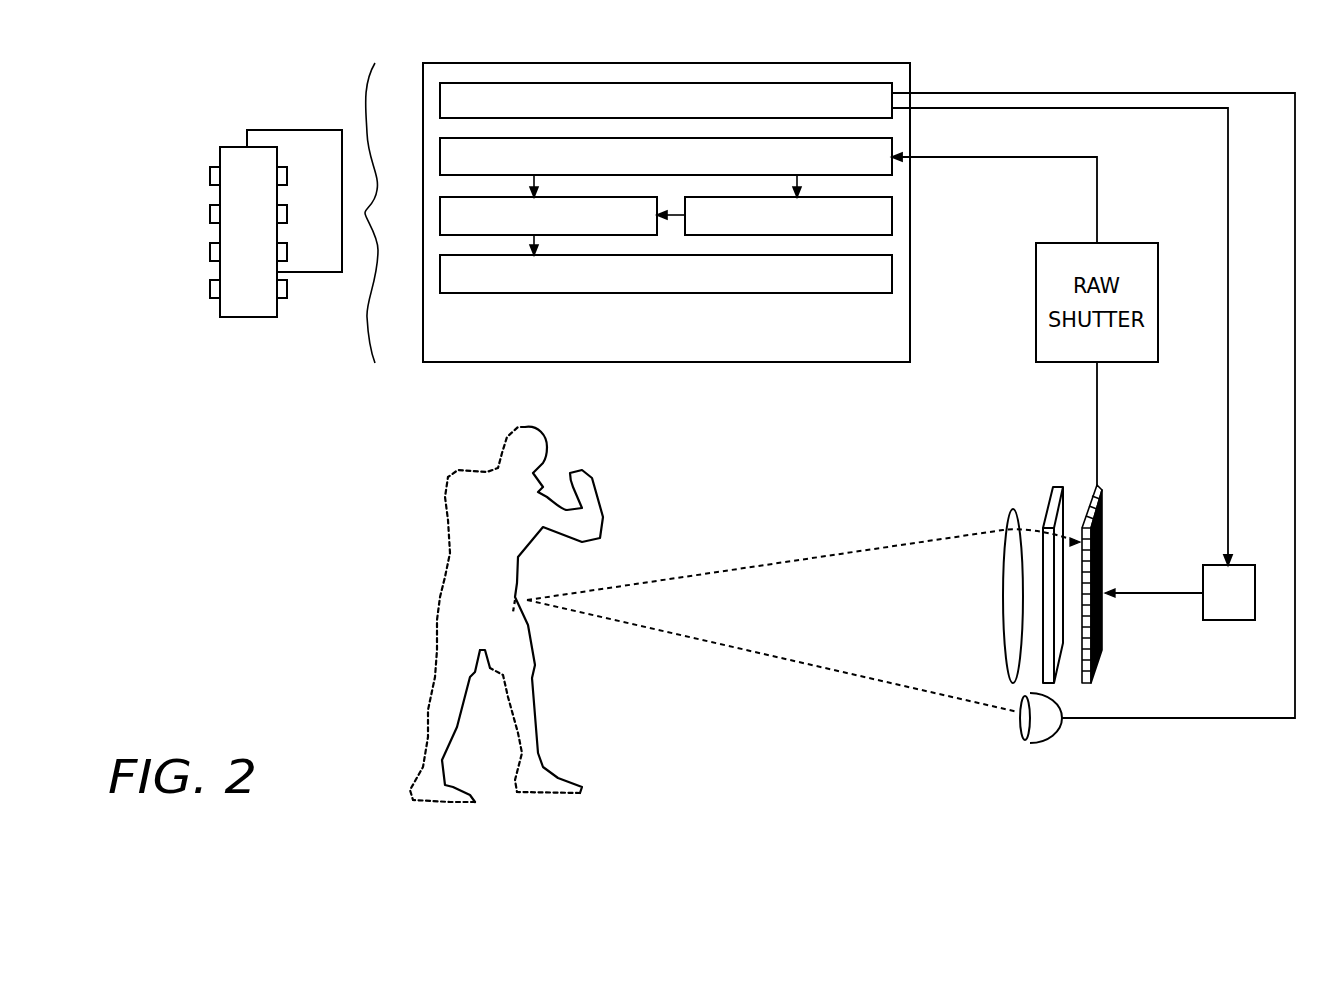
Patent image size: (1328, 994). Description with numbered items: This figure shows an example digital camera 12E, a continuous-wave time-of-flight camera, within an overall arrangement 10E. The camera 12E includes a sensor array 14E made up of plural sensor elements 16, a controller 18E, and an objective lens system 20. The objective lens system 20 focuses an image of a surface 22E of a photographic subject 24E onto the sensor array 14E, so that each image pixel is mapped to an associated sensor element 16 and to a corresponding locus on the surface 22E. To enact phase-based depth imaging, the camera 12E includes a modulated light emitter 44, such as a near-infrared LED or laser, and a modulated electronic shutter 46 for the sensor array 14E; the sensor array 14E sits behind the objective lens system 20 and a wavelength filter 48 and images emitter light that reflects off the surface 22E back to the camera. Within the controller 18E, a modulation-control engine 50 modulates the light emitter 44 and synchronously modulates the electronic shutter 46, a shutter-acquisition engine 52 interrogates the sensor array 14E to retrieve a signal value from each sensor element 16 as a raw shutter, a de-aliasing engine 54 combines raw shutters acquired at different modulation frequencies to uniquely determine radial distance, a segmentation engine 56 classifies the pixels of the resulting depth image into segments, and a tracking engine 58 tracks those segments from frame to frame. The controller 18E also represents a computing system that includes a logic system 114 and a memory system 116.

The depth-imaging system / environment 10E is at (220, 472).
The digital camera 12E is at (945, 507).
The sensor array 14E is at (1133, 578).
The sensor elements 16 is at (1088, 498).
The controller 18E is at (757, 352).
The objective lens system 20 is at (1003, 623).
The surface 22E is at (537, 698).
The photographic subject 24E is at (498, 587).
The modulated light emitter 44 is at (1053, 731).
The modulated electronic shutter 46 is at (1239, 606).
The wavelength filter 48 is at (1062, 485).
The modulation-control engine 50 is at (802, 114).
The shutter-acquisition engine 52 is at (798, 169).
The de-aliasing engine 54 is at (867, 227).
The segmentation engine 56 is at (645, 227).
The tracking engine 58 is at (732, 284).
The logic system 114 is at (325, 211).
The memory system 116 is at (265, 242).